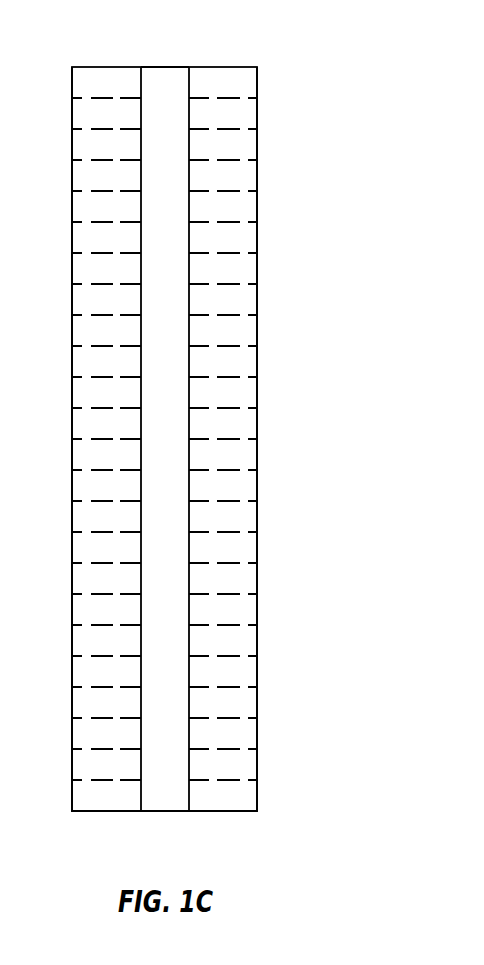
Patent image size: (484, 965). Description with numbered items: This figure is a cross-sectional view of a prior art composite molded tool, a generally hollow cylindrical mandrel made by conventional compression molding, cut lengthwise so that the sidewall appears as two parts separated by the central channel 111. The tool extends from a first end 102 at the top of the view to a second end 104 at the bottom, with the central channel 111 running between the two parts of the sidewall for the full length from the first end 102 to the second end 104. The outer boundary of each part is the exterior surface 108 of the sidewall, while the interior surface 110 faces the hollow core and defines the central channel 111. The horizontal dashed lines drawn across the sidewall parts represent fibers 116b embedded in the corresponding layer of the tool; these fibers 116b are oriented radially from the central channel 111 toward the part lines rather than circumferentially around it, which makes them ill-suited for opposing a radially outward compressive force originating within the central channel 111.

The first end 102 is at (160, 40).
The second end 104 is at (108, 818).
The exterior surface 108 is at (258, 253).
The interior surface 110 is at (191, 79).
The central channel 111 is at (163, 787).
The fibers 116b is at (228, 347).